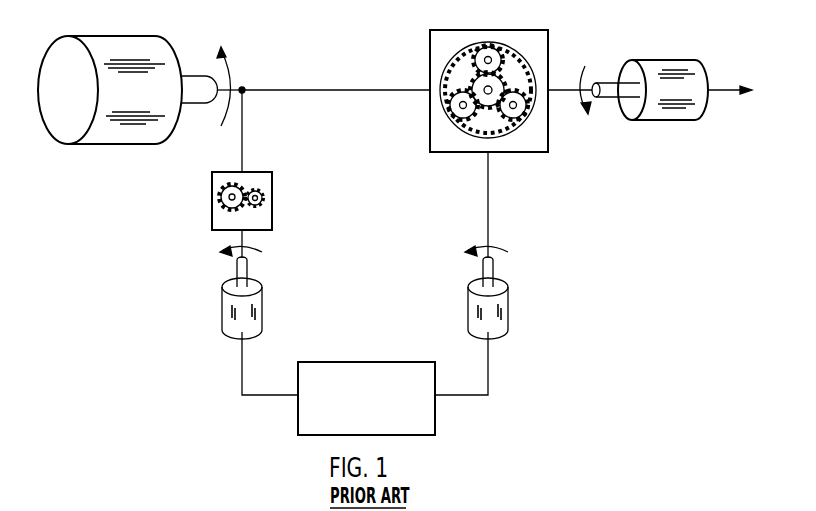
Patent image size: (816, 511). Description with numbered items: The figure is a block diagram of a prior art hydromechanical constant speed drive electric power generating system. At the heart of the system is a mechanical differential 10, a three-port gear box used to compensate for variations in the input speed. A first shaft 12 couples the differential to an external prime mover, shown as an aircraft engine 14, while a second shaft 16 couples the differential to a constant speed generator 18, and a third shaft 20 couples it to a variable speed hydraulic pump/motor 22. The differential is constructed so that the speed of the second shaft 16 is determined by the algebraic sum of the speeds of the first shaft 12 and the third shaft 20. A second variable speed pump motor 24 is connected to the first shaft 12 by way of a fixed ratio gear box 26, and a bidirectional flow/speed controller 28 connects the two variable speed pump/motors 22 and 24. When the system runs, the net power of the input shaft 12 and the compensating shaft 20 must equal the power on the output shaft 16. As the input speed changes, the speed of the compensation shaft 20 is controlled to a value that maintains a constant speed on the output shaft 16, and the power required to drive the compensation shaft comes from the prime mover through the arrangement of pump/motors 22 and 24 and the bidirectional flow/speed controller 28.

The mechanical differential 10 is at (536, 152).
The first shaft 12 is at (396, 89).
The aircraft engine 14 is at (121, 36).
The second shaft 16 is at (565, 82).
The constant speed generator 18 is at (663, 60).
The third shaft 20 is at (488, 194).
The variable speed hydraulic pump/motor 22 is at (508, 312).
The second variable speed pump motor 24 is at (222, 312).
The fixed ratio gear box 26 is at (212, 196).
The bidirectional flow/speed controller 28 is at (351, 361).